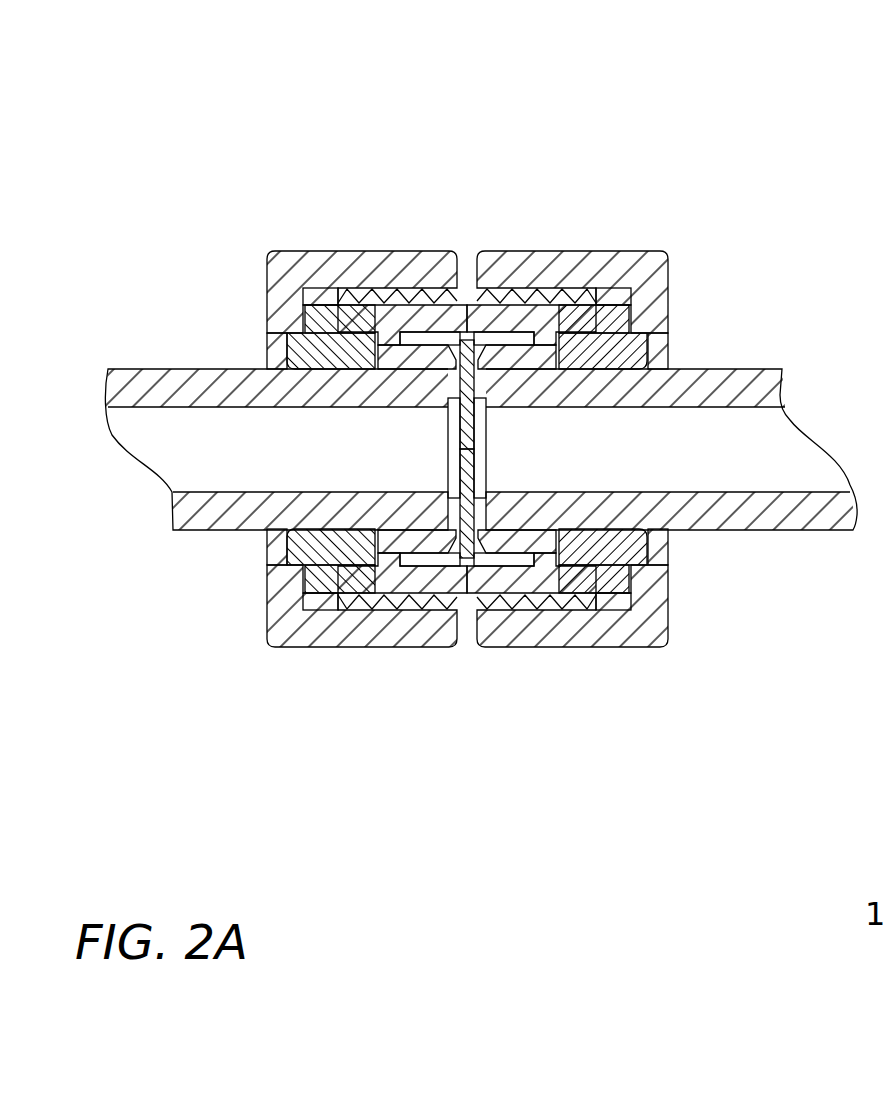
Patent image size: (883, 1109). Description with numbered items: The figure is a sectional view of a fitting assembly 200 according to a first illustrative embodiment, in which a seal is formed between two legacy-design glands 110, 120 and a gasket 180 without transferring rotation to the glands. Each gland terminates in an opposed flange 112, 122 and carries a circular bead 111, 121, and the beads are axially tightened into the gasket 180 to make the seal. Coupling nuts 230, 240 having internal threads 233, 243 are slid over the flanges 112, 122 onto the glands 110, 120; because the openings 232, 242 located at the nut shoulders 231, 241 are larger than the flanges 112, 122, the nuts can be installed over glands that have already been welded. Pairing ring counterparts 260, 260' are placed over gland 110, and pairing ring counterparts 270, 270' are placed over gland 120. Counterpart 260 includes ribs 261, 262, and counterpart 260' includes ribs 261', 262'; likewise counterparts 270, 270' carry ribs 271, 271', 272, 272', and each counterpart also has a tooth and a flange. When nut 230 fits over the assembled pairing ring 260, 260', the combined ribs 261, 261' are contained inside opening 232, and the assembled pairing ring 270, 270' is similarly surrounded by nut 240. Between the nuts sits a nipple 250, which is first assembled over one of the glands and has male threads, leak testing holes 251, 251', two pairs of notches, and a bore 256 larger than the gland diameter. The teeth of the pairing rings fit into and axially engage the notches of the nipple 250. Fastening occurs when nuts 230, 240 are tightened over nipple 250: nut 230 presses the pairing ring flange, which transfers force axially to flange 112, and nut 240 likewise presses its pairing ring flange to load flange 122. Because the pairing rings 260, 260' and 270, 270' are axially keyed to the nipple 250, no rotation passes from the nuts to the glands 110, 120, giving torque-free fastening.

The fitting assembly 200 is at (162, 156).
The gland 110 is at (160, 380).
The gland 120 is at (740, 393).
The bead 111 is at (458, 525).
The flange 112 is at (380, 357).
The bead 121 is at (480, 513).
The flange 122 is at (550, 347).
The gasket 180 is at (467, 357).
The coupling nut 230 is at (330, 267).
The shoulder 231 is at (303, 320).
The opening 232 is at (267, 548).
The internal threads 233 is at (360, 302).
The coupling nut 240 is at (600, 262).
The shoulder 241 is at (638, 577).
The opening 242 is at (663, 550).
The internal threads 243 is at (588, 305).
The nipple 250 is at (522, 590).
The leak testing hole 251 is at (422, 636).
The leak testing hole 251' is at (425, 281).
The bore 256 is at (450, 568).
The pairing ring counterpart 260 is at (284, 647).
The pairing ring counterpart 260' is at (302, 257).
The rib 261 is at (261, 599).
The rib 261' is at (278, 339).
The rib 262 is at (290, 633).
The rib 262' is at (276, 275).
The pairing ring counterpart 270 is at (623, 647).
The pairing ring counterpart 270' is at (691, 279).
The rib 271 is at (668, 581).
The rib 271' is at (686, 314).
The rib 272 is at (597, 637).
The rib 272' is at (652, 269).